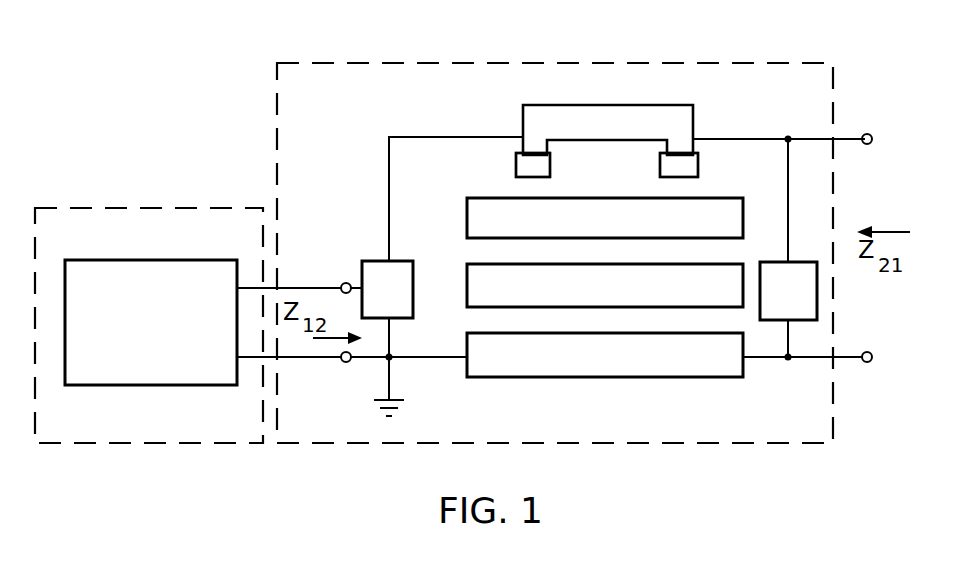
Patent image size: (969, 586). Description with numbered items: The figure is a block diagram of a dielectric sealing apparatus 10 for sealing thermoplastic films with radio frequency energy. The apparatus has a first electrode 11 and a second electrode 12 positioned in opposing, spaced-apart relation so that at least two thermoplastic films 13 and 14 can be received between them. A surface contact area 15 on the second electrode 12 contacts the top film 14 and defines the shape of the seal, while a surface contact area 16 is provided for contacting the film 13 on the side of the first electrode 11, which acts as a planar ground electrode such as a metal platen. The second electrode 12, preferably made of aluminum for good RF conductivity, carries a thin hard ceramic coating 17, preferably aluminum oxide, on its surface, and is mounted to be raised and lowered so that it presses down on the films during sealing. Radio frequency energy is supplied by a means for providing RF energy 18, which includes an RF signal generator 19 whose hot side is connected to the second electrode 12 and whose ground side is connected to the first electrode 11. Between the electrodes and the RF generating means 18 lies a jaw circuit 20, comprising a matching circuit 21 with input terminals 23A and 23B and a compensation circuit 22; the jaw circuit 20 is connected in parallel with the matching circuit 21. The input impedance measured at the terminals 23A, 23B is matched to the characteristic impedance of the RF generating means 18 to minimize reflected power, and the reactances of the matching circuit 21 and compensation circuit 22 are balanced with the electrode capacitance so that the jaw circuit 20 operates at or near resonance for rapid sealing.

The sealing apparatus 10 is at (548, 62).
The first electrode 11 is at (605, 355).
The second electrode 12 is at (608, 130).
The thermoplastic film 13 is at (605, 285).
The thermoplastic film 14 is at (605, 218).
The surface contact area 15 is at (516, 175).
The surface contact area 16 is at (467, 333).
The ceramic coating 17 is at (550, 167).
The means for providing RF energy 18 is at (137, 207).
The RF signal generator 19 is at (145, 386).
The jaw circuit 20 is at (389, 130).
The matching circuit 21 is at (387, 289).
The compensation circuit 22 is at (788, 248).
The input terminal 23A is at (346, 282).
The input terminal 23B is at (346, 363).